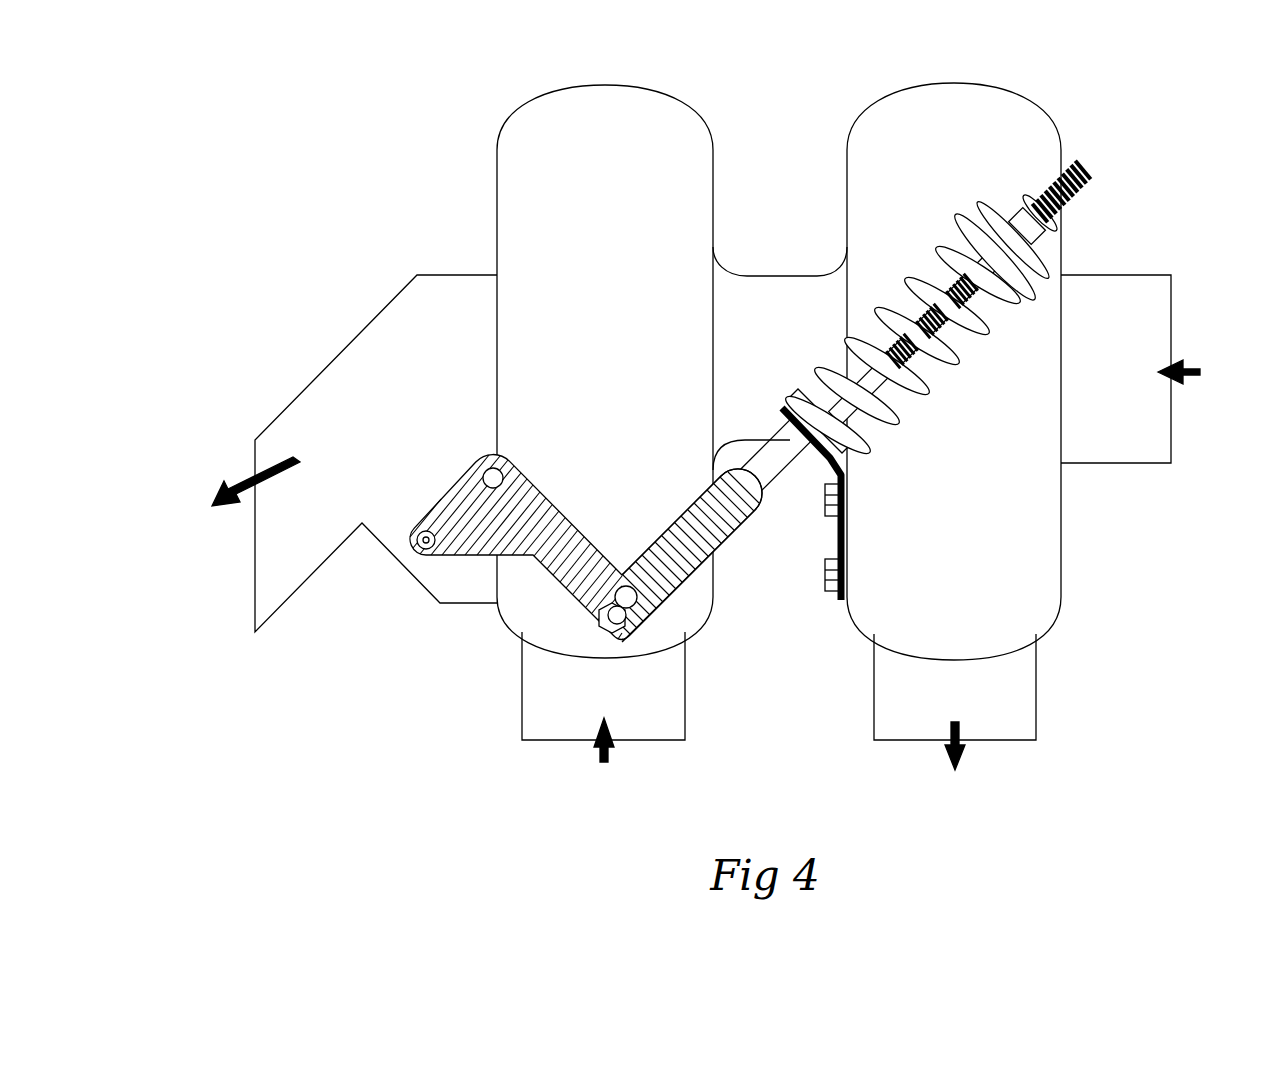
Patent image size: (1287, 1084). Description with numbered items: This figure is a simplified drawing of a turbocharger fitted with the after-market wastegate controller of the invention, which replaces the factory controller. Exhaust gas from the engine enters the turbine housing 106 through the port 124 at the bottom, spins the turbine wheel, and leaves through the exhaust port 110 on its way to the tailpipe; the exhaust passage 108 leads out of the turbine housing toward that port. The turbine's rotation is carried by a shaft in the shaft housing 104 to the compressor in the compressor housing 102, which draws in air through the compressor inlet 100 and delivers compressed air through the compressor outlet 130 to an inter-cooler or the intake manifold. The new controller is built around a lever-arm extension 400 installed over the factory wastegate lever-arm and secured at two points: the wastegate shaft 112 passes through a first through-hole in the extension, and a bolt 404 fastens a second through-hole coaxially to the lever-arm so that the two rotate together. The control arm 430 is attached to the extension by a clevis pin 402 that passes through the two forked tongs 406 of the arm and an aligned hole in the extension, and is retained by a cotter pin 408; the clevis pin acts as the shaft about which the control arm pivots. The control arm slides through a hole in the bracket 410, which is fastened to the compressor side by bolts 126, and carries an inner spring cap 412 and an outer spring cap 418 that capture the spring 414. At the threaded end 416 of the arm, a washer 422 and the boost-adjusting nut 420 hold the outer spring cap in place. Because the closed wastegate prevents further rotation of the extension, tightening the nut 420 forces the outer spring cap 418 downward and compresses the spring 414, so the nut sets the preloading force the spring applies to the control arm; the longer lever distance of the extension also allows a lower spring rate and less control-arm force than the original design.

The compressor inlet 100 is at (1171, 325).
The compressor housing 102 is at (1027, 105).
The shaft housing 104 is at (790, 278).
The turbine housing 106 is at (680, 108).
The exhaust outlet passage 108 is at (372, 326).
The exhaust port 110 is at (255, 605).
The wastegate shaft 112 is at (488, 470).
The port 124 is at (548, 742).
The mounting bolts 126 is at (825, 502).
The compressor outlet 130 is at (900, 742).
The lever-arm extension 400 is at (462, 508).
The clevis pin 402 is at (637, 612).
The bolt 404 is at (424, 552).
The tongs 406 is at (680, 553).
The cotter pin 408 is at (598, 603).
The bracket 410 is at (780, 412).
The inner spring cap 412 is at (812, 395).
The spring 414 is at (880, 405).
The threaded end 416 is at (953, 318).
The outer spring cap 418 is at (970, 244).
The adjusting nut 420 is at (1043, 240).
The washer 422 is at (1006, 216).
The control arm 430 is at (763, 462).